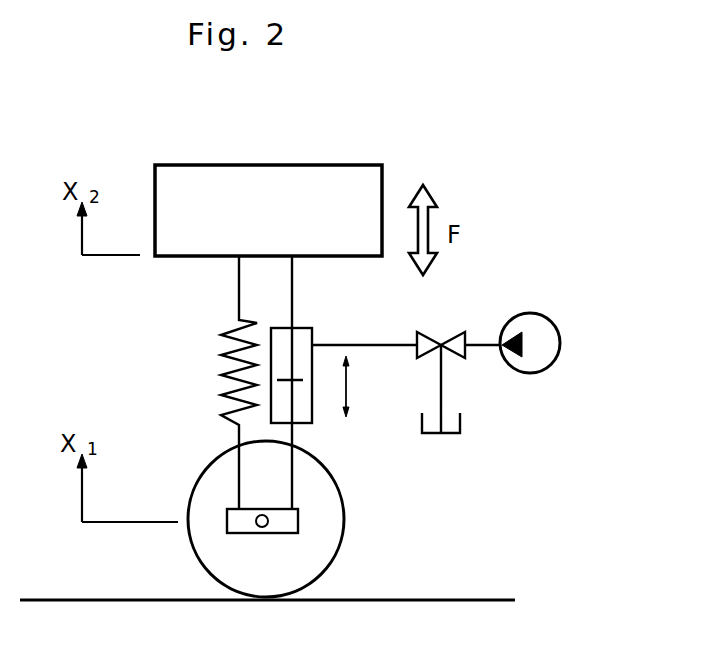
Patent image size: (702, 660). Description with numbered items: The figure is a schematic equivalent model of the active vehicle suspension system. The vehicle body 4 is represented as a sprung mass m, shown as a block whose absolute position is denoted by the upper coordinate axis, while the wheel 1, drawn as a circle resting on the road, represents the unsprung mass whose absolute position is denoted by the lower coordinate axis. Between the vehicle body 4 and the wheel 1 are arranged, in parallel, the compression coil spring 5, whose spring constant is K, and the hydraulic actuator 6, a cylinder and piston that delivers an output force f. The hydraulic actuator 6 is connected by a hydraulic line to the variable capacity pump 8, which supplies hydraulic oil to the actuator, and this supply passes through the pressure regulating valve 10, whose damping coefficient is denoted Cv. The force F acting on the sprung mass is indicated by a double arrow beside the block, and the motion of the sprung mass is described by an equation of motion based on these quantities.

The wheel 1 is at (343, 532).
The vehicle body 4 is at (313, 165).
The compression coil spring 5 is at (226, 347).
The hydraulic actuator 6 is at (300, 328).
The variable capacity pump 8 is at (551, 318).
The pressure regulating valve 10 is at (465, 347).